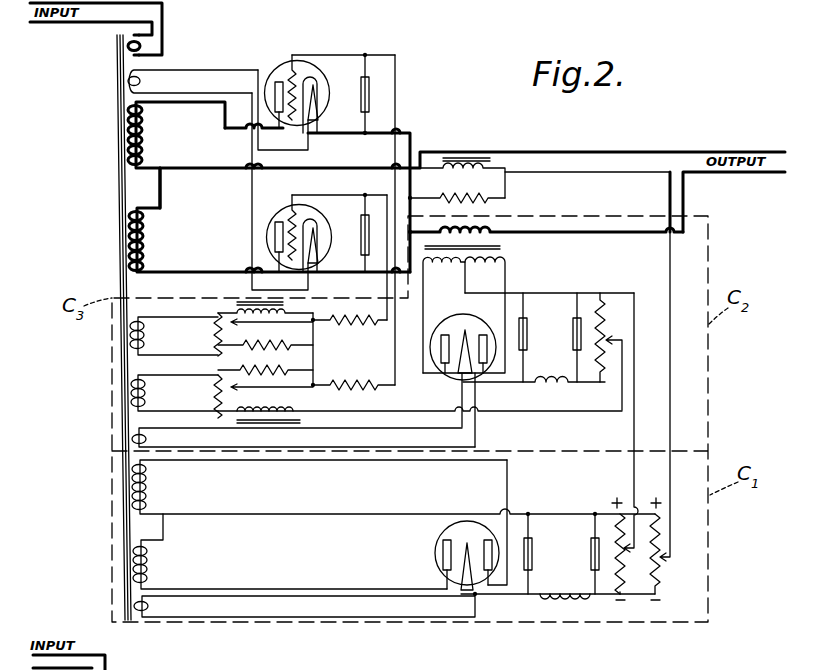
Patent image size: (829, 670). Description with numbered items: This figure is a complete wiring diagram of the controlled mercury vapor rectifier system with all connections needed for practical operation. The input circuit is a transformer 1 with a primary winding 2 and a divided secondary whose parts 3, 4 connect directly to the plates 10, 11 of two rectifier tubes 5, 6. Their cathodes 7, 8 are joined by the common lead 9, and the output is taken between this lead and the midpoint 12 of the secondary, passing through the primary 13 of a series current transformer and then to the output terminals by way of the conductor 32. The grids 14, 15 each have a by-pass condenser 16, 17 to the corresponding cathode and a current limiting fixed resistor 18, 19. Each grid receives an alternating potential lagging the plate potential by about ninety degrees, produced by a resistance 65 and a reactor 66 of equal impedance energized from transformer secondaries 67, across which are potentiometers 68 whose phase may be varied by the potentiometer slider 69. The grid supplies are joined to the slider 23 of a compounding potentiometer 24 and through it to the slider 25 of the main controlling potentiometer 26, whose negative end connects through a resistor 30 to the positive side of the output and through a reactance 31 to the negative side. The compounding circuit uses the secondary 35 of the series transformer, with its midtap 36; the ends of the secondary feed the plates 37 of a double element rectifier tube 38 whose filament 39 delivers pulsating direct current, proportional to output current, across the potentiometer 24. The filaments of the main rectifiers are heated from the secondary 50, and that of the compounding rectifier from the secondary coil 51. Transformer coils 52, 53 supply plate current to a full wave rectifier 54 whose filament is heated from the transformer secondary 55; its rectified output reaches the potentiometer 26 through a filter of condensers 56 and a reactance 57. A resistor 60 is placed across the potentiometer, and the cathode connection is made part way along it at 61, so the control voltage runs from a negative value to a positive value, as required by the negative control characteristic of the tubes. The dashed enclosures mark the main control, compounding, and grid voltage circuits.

The transformer 1 is at (118, 155).
The primary winding 2 is at (128, 48).
The secondary winding part 3 is at (143, 136).
The secondary winding part 4 is at (144, 240).
The rectifier tube 5 is at (314, 72).
The rectifier tube 6 is at (307, 223).
The cathode 7 is at (312, 75).
The cathode 8 is at (314, 220).
The lead 9 is at (413, 133).
The plate 10 is at (275, 92).
The plate 11 is at (275, 235).
The midpoint of the secondary 12 is at (162, 168).
The primary of series transformer 13 is at (494, 242).
The grid 14 is at (294, 64).
The grid 15 is at (294, 208).
The by-pass condenser 16 is at (370, 80).
The by-pass condenser 17 is at (368, 232).
The fixed resistor 18 is at (352, 328).
The fixed resistor 19 is at (360, 385).
The slider 23 is at (620, 343).
The potentiometer 24 is at (603, 305).
The slider 25 is at (636, 530).
The main controlling potentiometer 26 is at (620, 595).
The resistor 30 is at (446, 196).
The reactance 31 is at (466, 160).
The output conductor 32 is at (508, 174).
The secondary 35 is at (450, 270).
The midtap 36 is at (470, 268).
The plates 37 is at (467, 378).
The double element rectifier tube 38 is at (447, 363).
The filament 39 is at (480, 364).
The secondary 50 is at (140, 80).
The secondary coil 51 is at (130, 440).
The transformer coil 52 is at (130, 486).
The transformer coil 53 is at (130, 560).
The full wave rectifier 54 is at (440, 553).
The transformer secondary 55 is at (130, 603).
The condensers 56 is at (588, 556).
The reactance 57 is at (560, 600).
The resistor 60 is at (660, 535).
The connection 61 is at (664, 565).
The resistance 65 is at (262, 369).
The reactor 66 is at (270, 420).
The transformer secondaries 67 is at (130, 390).
The potentiometers 68 is at (214, 395).
The potentiometer slider 69 is at (228, 416).